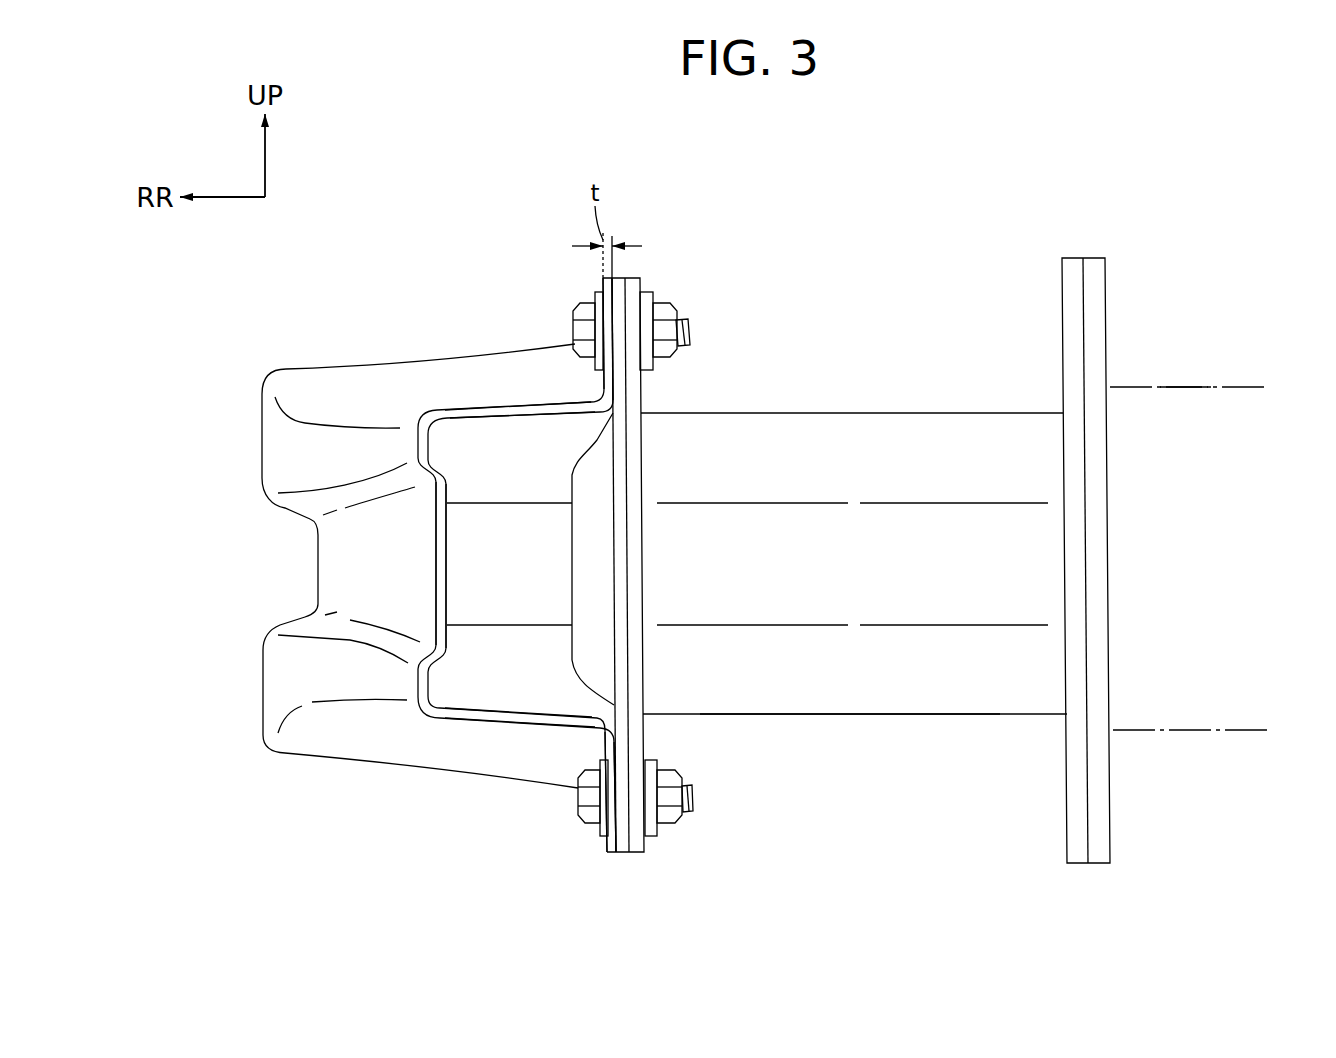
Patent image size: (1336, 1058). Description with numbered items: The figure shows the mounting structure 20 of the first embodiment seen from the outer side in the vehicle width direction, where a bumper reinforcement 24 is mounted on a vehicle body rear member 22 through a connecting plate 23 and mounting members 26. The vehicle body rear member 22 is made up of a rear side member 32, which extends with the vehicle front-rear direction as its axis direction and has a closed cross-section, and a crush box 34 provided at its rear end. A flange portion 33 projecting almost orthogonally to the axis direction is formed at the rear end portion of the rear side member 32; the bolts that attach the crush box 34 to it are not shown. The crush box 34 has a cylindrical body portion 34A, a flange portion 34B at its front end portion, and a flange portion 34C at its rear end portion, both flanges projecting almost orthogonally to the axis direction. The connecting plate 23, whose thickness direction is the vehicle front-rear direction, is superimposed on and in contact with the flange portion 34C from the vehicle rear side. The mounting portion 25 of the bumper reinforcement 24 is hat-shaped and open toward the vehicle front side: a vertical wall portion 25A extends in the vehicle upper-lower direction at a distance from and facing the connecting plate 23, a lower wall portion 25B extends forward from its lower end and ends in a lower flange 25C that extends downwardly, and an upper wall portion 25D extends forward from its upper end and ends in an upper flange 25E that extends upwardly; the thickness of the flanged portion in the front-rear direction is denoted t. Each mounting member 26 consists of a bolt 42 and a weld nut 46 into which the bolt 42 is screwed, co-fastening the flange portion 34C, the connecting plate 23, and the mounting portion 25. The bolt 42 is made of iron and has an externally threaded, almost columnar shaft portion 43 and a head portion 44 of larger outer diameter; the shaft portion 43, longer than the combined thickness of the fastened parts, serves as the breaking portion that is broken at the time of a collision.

The mounting structure 20 is at (738, 232).
The vehicle body rear member 22 is at (1233, 384).
The connecting plate 23 is at (625, 848).
The bumper reinforcement 24 is at (337, 366).
The mounting portion 25 is at (596, 386).
The vertical wall portion 25A is at (440, 567).
The lower wall portion 25B is at (503, 707).
The lower flange 25C is at (597, 748).
The upper wall portion 25D is at (505, 419).
The upper flange 25E is at (598, 286).
The mounting member 26 is at (672, 286).
The rear side member 32 is at (1193, 384).
The flange portion 33 is at (1100, 290).
The crush box 34 is at (856, 410).
The body portion 34A is at (875, 703).
The flange portion 34B is at (1073, 270).
The flange portion 34C is at (632, 287).
The bolt 42 is at (570, 330).
The shaft portion 43 is at (678, 317).
The head portion 44 is at (593, 297).
The weld nut 46 is at (663, 363).